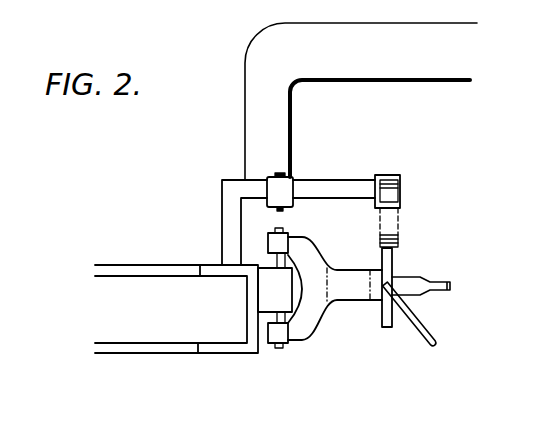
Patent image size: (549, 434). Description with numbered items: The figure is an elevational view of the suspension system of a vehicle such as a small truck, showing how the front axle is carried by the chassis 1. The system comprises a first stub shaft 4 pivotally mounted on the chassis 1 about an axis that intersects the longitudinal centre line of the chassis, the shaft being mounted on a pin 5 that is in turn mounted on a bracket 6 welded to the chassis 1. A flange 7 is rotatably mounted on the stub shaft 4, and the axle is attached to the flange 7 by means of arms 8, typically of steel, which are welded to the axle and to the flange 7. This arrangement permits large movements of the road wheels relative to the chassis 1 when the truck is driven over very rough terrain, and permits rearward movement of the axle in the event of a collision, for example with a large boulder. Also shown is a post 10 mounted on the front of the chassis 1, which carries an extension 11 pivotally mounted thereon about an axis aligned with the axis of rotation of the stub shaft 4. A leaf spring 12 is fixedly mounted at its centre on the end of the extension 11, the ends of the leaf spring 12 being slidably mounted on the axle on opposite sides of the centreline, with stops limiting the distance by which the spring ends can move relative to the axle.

The chassis 1 is at (216, 355).
The first stub shaft 4 is at (350, 292).
The pin 5 is at (268, 262).
The bracket 6 is at (272, 290).
The flange 7 is at (393, 262).
The arms 8 is at (430, 333).
The post 10 is at (222, 218).
The extension 11 is at (336, 191).
The leaf spring 12 is at (400, 188).